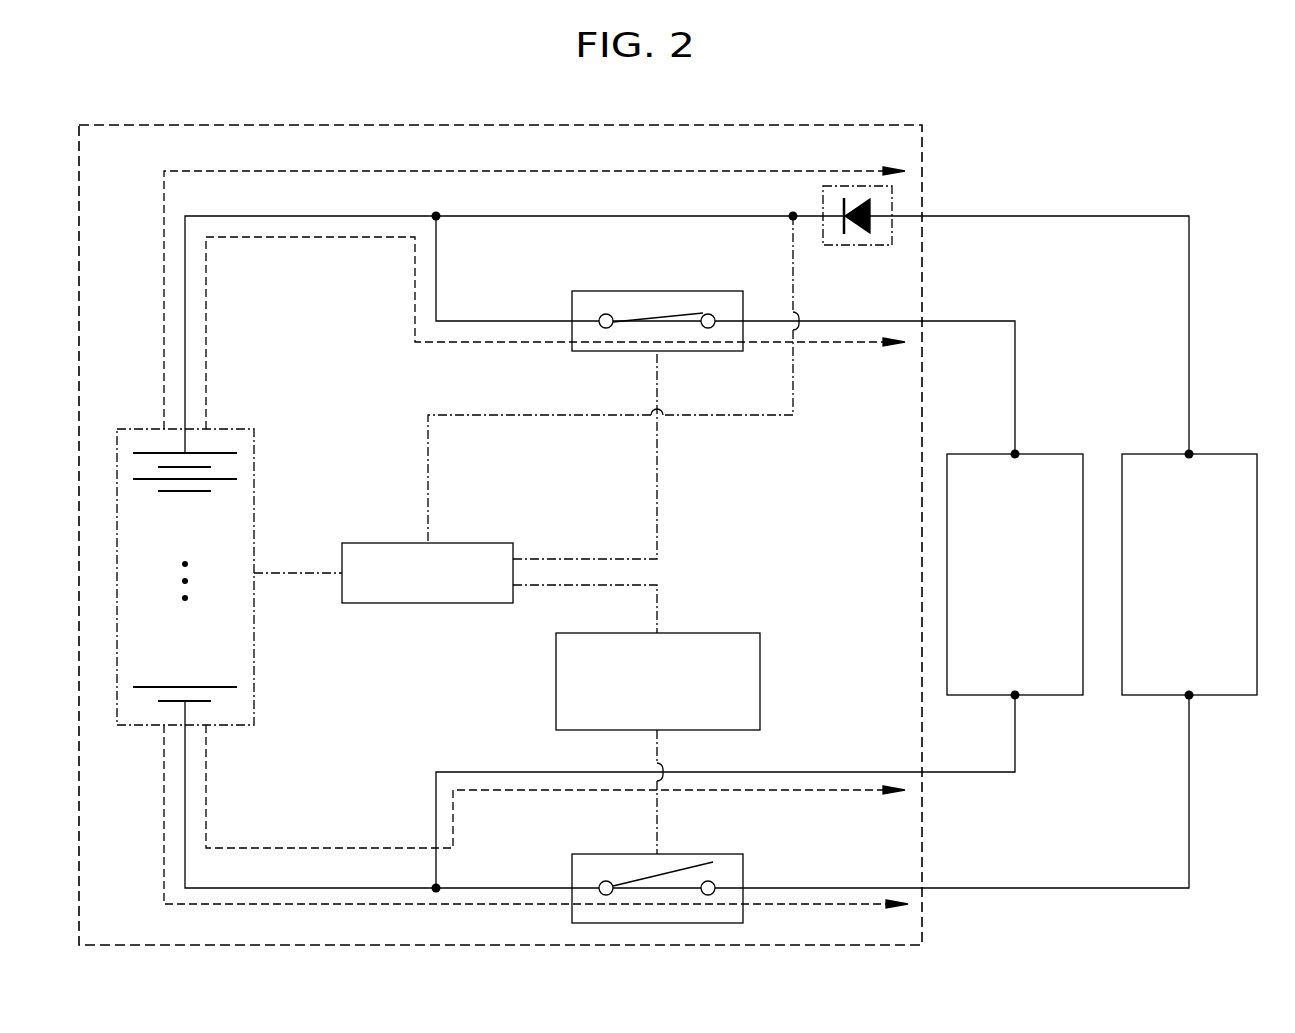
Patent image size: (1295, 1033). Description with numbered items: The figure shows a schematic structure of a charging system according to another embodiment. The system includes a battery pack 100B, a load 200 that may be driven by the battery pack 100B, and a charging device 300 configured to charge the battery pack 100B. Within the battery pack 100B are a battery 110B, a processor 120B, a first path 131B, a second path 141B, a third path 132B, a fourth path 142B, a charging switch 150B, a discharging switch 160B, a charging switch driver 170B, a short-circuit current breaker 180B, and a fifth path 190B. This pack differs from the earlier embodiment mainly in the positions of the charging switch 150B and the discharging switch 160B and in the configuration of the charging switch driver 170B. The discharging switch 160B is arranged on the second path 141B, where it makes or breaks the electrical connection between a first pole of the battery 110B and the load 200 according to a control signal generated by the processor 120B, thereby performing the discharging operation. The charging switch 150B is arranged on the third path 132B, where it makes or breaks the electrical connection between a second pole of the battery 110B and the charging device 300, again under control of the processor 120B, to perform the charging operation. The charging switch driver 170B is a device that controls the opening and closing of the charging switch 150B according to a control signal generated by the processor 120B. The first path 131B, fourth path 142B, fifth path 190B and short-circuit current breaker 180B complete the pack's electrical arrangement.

The battery pack 100B is at (497, 125).
The battery 110B is at (254, 658).
The processor 120B is at (483, 543).
The first path 131B is at (534, 282).
The third path 132B is at (536, 833).
The second path 141B is at (555, 333).
The fourth path 142B is at (555, 786).
The charging switch 150B is at (593, 854).
The discharging switch 160B is at (657, 291).
The charging switch driver 170B is at (727, 633).
The short-circuit current breaker 180B is at (860, 247).
The fifth path 190B is at (725, 416).
The load 200 is at (1062, 454).
The charging device 300 is at (1240, 454).